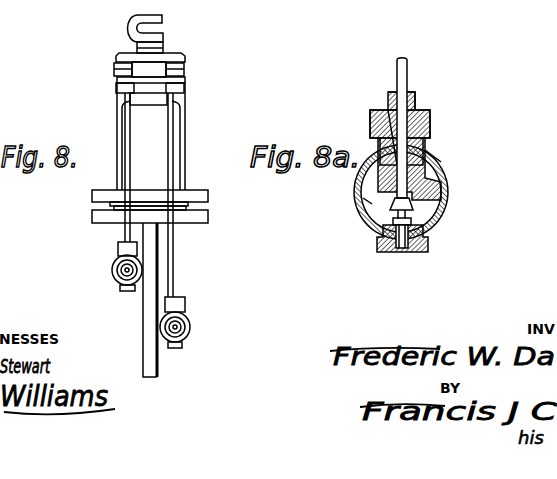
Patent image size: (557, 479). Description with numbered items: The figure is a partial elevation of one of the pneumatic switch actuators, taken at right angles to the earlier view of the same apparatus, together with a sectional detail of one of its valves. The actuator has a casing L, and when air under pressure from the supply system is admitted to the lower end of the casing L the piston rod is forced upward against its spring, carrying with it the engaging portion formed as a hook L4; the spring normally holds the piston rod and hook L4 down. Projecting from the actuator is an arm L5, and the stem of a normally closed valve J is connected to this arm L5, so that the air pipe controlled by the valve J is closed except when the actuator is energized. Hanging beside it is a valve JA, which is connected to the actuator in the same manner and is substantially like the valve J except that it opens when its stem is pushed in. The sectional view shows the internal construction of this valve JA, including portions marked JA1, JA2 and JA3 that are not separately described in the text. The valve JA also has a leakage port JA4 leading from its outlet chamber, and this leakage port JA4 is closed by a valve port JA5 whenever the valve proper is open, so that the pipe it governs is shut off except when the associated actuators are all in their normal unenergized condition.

In FIG. 8, the casing L is at (183, 150).
In FIG. 8, the hook L4 is at (152, 37).
In FIG. 8, the arm L5 is at (142, 96).
In FIG. 8, the normally closed valve J is at (113, 278).
In FIG. 8, the valve JA is at (160, 326).
In FIG. 8A, the valve JA is at (449, 192).
In FIG. 8A, the valve body JA1 is at (427, 171).
In FIG. 8A, the valve chamber JA2 is at (370, 208).
In FIG. 8A, the valve disc JA3 is at (411, 206).
In FIG. 8A, the leakage port JA4 is at (406, 253).
In FIG. 8A, the valve port JA5 is at (381, 238).